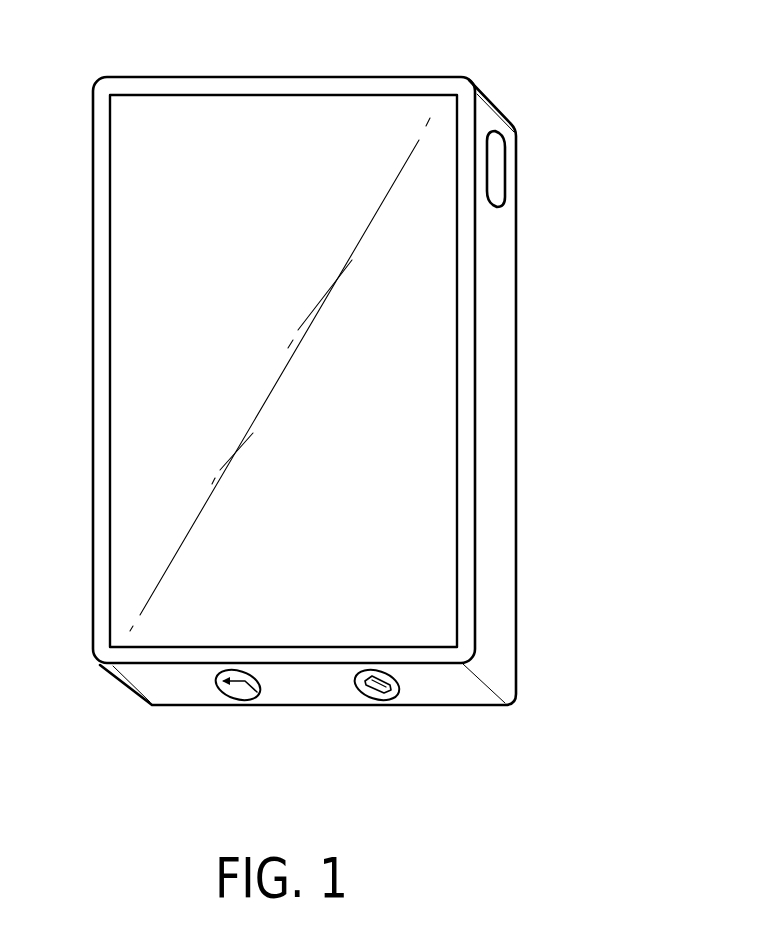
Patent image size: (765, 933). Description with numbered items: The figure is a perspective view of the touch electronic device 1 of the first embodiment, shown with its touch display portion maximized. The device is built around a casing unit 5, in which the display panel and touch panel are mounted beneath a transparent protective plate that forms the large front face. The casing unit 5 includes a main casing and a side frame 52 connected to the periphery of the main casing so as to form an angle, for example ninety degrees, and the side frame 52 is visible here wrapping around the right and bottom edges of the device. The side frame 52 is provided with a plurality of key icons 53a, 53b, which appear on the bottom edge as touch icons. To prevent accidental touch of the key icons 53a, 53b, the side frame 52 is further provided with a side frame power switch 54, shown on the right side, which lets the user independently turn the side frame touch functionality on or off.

The touch electronic device 1 is at (68, 45).
The casing unit 5 is at (369, 433).
The side frame 52 is at (492, 305).
The key icon 53a is at (377, 697).
The key icon 53b is at (237, 697).
The side frame power switch 54 is at (496, 171).